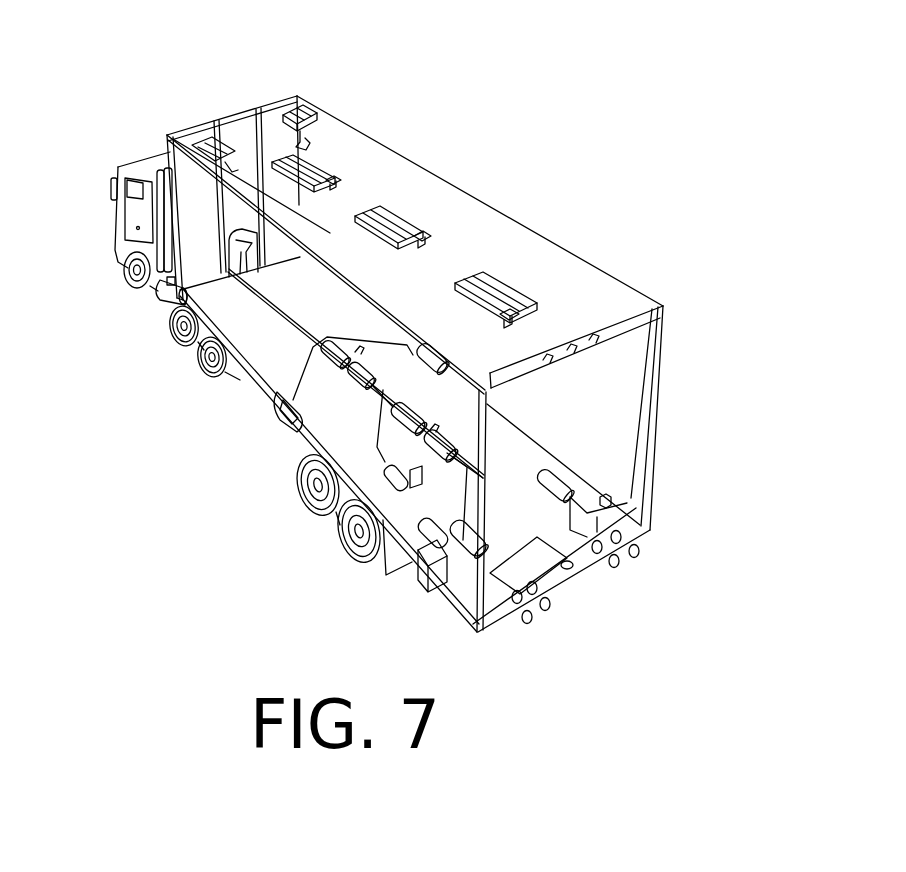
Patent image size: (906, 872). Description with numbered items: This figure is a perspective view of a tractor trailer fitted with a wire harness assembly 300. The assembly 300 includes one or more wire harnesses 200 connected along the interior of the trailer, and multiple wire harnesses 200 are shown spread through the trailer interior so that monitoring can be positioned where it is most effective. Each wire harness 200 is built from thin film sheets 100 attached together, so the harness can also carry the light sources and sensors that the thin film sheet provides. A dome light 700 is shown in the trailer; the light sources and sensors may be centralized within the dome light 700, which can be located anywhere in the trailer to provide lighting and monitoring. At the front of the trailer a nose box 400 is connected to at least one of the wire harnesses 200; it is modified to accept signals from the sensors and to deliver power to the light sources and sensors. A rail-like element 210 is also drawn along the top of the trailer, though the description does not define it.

The wire harness assembly 300 is at (616, 92).
The wire harness 200 is at (612, 315).
The top rail 210 is at (410, 161).
The thin film sheet 100 is at (312, 163).
The dome light 700 is at (316, 158).
The nose box 400 is at (234, 285).